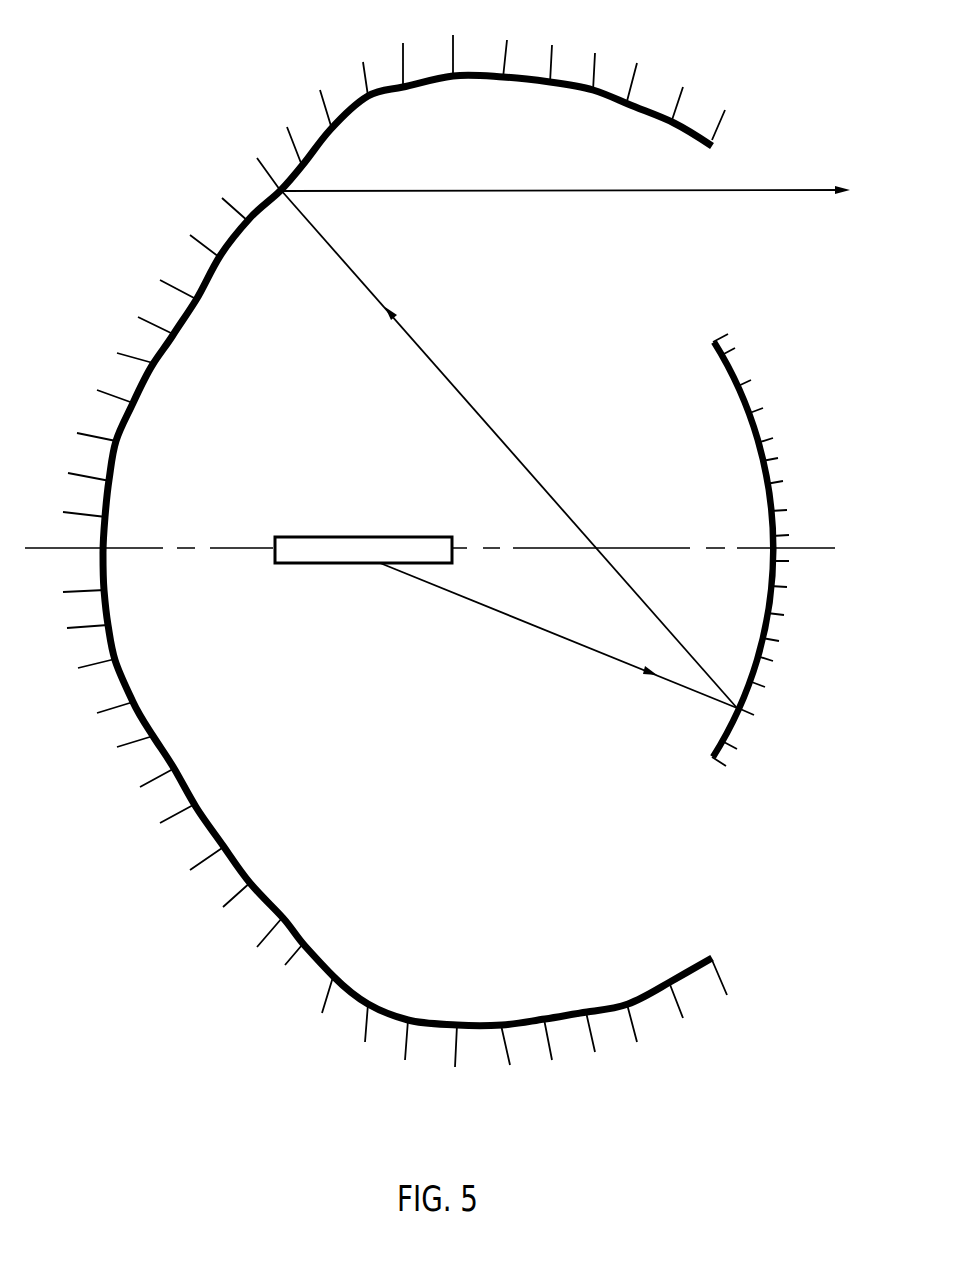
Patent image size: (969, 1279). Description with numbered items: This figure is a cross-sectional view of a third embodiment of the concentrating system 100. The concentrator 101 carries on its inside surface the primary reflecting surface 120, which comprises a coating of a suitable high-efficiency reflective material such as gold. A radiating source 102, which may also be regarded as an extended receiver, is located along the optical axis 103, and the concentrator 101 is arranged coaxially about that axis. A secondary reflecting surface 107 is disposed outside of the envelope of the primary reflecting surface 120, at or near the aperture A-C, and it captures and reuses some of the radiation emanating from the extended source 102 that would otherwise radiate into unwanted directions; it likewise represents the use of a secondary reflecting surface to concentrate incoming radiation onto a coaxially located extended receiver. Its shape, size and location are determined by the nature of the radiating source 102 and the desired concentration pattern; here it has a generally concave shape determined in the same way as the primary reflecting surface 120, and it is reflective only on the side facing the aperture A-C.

The reflector system / luminaire 100 is at (437, 551).
The concentrator 101 is at (160, 352).
The radiating source 102 is at (325, 564).
The optical axis 103 is at (681, 551).
The secondary reflecting surface 107 is at (716, 759).
The reflecting surface 120 is at (143, 714).